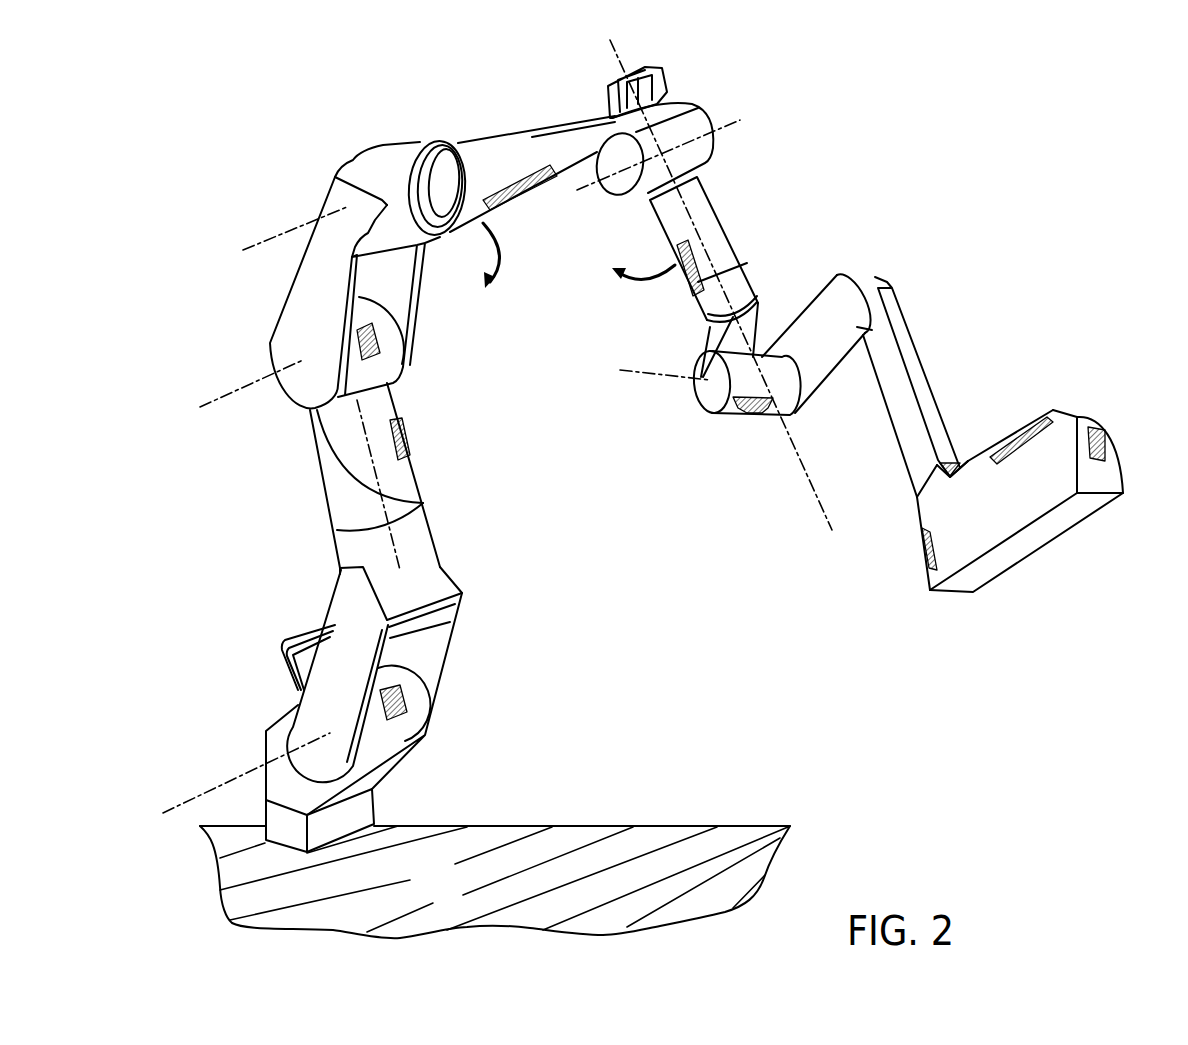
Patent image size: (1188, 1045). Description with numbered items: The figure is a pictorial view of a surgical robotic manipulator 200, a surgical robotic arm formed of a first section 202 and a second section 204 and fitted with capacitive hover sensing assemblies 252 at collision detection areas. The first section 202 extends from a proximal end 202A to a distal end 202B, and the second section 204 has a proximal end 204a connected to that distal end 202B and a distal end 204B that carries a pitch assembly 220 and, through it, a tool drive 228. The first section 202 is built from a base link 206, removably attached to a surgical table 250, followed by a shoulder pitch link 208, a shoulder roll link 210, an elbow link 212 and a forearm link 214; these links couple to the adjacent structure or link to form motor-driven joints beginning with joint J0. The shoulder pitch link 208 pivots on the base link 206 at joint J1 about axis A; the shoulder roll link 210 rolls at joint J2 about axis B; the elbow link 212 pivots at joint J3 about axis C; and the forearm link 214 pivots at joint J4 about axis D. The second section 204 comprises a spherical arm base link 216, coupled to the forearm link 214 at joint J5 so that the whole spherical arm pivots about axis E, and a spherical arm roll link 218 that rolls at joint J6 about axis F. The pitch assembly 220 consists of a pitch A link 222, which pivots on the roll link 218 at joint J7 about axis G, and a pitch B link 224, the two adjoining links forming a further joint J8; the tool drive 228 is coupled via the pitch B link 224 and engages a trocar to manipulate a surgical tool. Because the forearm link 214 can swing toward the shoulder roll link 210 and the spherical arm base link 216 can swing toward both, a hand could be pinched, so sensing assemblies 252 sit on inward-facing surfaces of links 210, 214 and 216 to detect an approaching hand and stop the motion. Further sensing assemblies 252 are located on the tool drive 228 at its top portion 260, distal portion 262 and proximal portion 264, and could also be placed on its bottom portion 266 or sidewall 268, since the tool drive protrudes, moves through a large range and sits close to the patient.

The surgical robotic manipulator 200 is at (243, 60).
The first section 202 is at (208, 348).
The proximal end of first section 202A is at (248, 718).
The distal end of first section 202B is at (580, 178).
The second section 204 is at (1034, 238).
The proximal end of second section 204a is at (724, 100).
The distal end of second section 204B is at (957, 450).
The base link 206 is at (383, 765).
The shoulder pitch link 208 is at (340, 660).
The shoulder roll link 210 is at (325, 496).
The elbow link 212 is at (317, 262).
The forearm link 214 is at (483, 152).
The spherical arm base link 216 is at (720, 240).
The spherical arm roll link 218 is at (704, 343).
The pitch assembly 220 is at (887, 200).
The pitch A link 222 is at (826, 297).
The pitch B link 224 is at (900, 313).
The tool drive 228 is at (1118, 520).
The surgical table 250 is at (453, 891).
The capacitive hover sensing assembly 252 is at (530, 170).
The top portion of tool drive 260 is at (975, 455).
The distal portion of tool drive 262 is at (1100, 420).
The proximal portion of tool drive 264 is at (915, 515).
The bottom portion of tool drive 266 is at (1045, 553).
The sidewall of tool drive 268 is at (1021, 502).
The joint J0 is at (350, 813).
The first joint J1 is at (410, 733).
The second joint J2 is at (417, 527).
The third joint J3 is at (404, 372).
The fourth joint J4 is at (392, 158).
The fifth joint J5 is at (648, 186).
The sixth joint J6 is at (748, 268).
The seventh joint J7 is at (698, 407).
The eighth joint J8 is at (868, 350).
The axis A is at (206, 795).
The axis B is at (365, 455).
The axis C is at (250, 380).
The axis D is at (268, 237).
The axis E is at (593, 192).
The axis F is at (806, 487).
The axis G is at (650, 380).